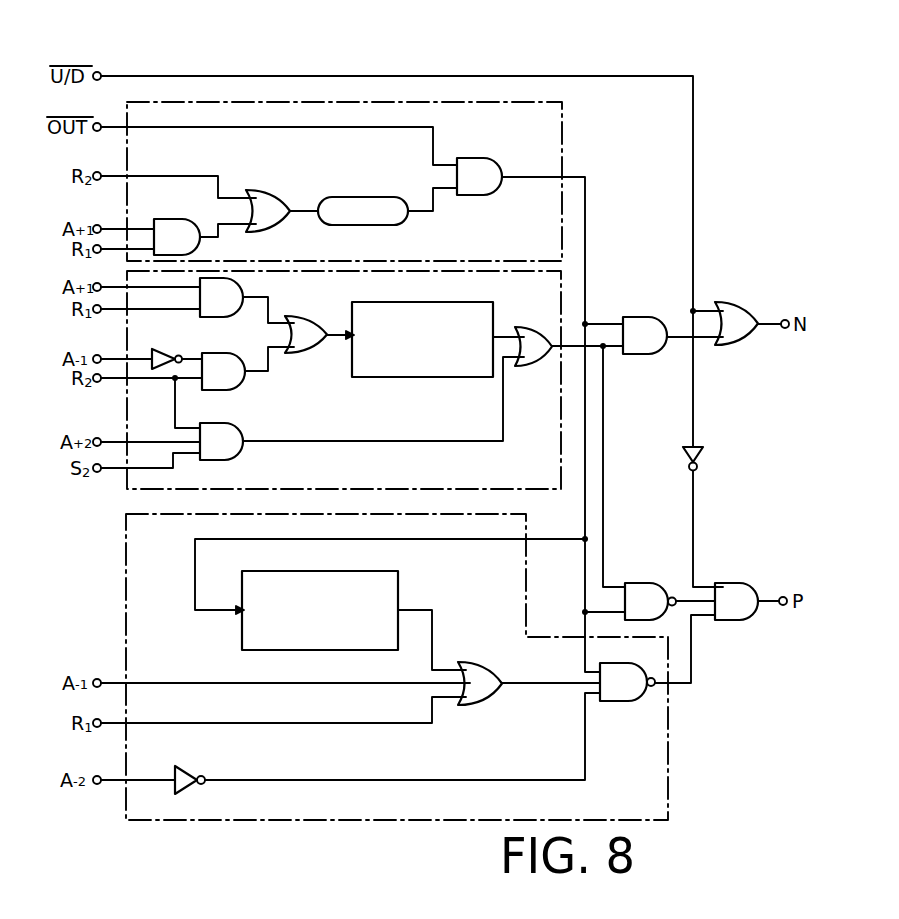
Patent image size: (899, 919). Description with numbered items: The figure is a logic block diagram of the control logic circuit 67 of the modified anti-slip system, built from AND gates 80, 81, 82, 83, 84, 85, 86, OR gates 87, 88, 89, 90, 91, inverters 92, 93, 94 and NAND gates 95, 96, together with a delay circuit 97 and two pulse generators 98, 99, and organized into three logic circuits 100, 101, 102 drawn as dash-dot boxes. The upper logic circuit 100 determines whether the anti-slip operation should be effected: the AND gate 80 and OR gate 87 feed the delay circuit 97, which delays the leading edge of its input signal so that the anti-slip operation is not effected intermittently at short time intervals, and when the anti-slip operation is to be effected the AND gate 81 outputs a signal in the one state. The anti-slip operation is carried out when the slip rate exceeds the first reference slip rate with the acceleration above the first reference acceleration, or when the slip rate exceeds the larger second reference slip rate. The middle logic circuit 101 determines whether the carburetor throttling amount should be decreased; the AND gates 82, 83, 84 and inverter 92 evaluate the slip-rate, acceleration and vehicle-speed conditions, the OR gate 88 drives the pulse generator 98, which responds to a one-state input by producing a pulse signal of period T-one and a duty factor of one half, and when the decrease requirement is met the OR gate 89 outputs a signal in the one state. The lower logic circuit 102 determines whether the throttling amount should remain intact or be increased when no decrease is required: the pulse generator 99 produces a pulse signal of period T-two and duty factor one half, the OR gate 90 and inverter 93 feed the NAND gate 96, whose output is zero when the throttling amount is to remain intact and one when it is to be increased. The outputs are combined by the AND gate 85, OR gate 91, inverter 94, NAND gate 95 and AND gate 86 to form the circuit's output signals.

The control logic circuit 67 is at (558, 60).
The AND gate 80 is at (178, 218).
The AND gate 81 is at (486, 157).
The AND gate 82 is at (248, 289).
The AND gate 83 is at (233, 352).
The AND gate 84 is at (243, 425).
The AND gate 85 is at (659, 318).
The AND gate 86 is at (745, 582).
The OR gate 87 is at (272, 192).
The OR gate 88 is at (313, 318).
The OR gate 89 is at (537, 327).
The OR gate 90 is at (487, 667).
The OR gate 91 is at (750, 305).
The inverter 92 is at (163, 351).
The inverter 93 is at (190, 775).
The inverter 94 is at (704, 459).
The NAND gate 95 is at (647, 583).
The NAND gate 96 is at (623, 703).
The delay circuit 97 is at (371, 197).
The pulse generator 98 is at (457, 302).
The pulse generator 99 is at (400, 578).
The logic circuit 100 is at (563, 153).
The logic circuit 101 is at (563, 285).
The logic circuit 102 is at (528, 597).